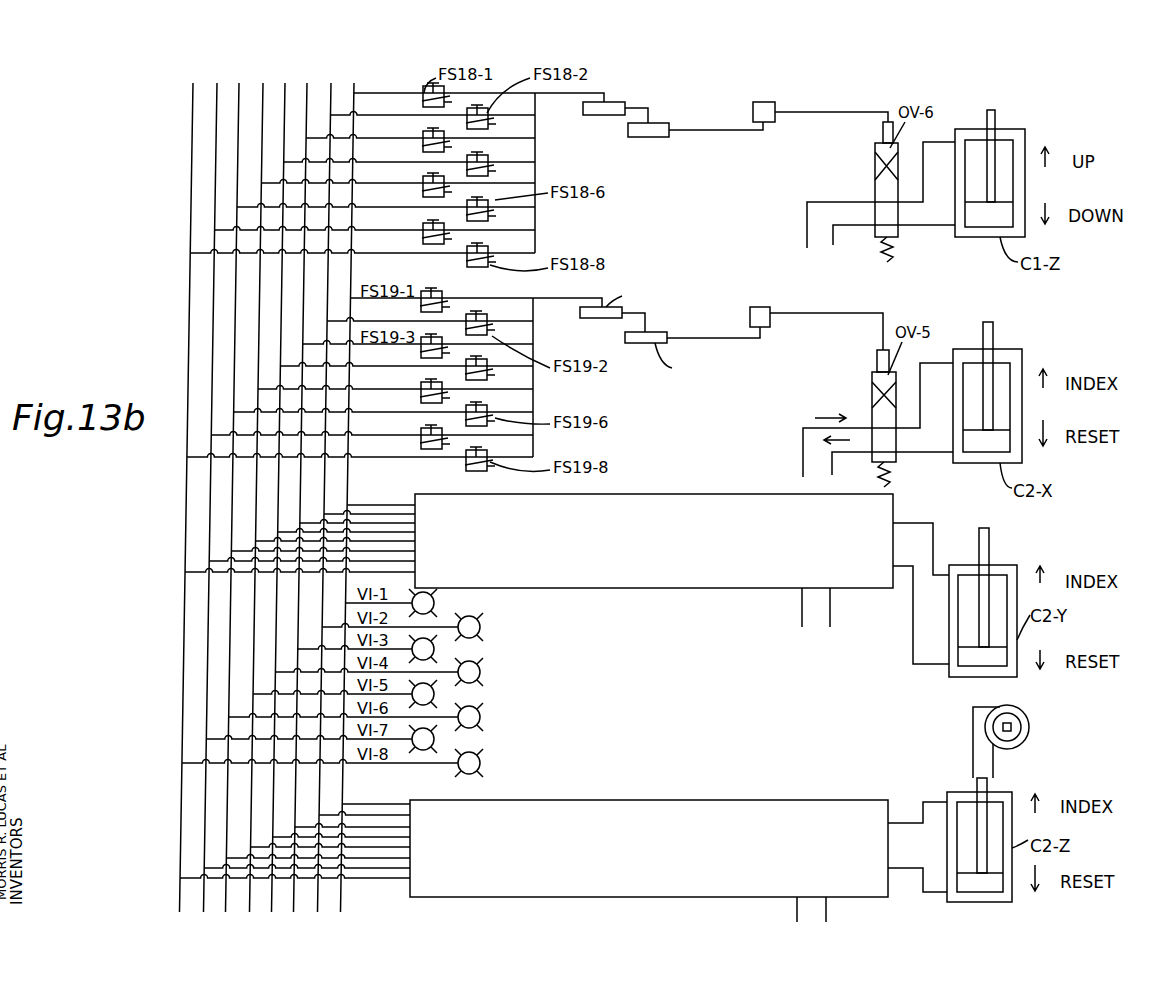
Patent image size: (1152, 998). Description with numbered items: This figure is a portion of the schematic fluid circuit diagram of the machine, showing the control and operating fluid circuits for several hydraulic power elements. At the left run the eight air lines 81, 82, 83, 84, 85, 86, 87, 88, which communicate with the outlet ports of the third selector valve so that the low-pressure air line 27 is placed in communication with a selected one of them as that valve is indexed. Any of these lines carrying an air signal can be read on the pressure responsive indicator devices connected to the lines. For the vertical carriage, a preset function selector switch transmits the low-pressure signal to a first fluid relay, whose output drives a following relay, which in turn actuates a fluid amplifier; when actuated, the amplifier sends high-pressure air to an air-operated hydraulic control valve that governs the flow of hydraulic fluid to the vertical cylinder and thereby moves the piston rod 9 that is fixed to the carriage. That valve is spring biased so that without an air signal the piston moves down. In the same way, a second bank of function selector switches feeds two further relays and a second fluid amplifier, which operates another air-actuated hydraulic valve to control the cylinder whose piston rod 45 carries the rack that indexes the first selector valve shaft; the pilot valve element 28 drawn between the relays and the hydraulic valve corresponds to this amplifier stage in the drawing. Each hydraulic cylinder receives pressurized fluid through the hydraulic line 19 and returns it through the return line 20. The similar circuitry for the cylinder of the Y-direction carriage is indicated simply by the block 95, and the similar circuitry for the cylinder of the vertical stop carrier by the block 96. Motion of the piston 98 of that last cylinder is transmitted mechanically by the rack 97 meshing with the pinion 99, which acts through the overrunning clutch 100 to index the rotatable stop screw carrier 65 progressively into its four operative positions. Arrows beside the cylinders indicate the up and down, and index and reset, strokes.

The piston rod 9 is at (995, 120).
The hydraulic line 19 is at (856, 202).
The return line 20 is at (833, 245).
The low-pressure air line 27 is at (583, 109).
The pilot valve (PV) 28 is at (753, 110).
The piston rod 45 is at (993, 342).
The carrier 65 is at (1012, 727).
The air line 81 is at (356, 90).
The air line 82 is at (333, 95).
The air line 83 is at (308, 100).
The air line 84 is at (286, 100).
The air line 85 is at (263, 102).
The air line 86 is at (239, 133).
The air line 87 is at (217, 157).
The air line 88 is at (193, 186).
The block 95 is at (740, 494).
The block 96 is at (688, 800).
The rack 97 is at (973, 733).
The piston 98 is at (975, 785).
The pinion 99 is at (1024, 712).
The overrunning clutch 100 is at (1015, 742).